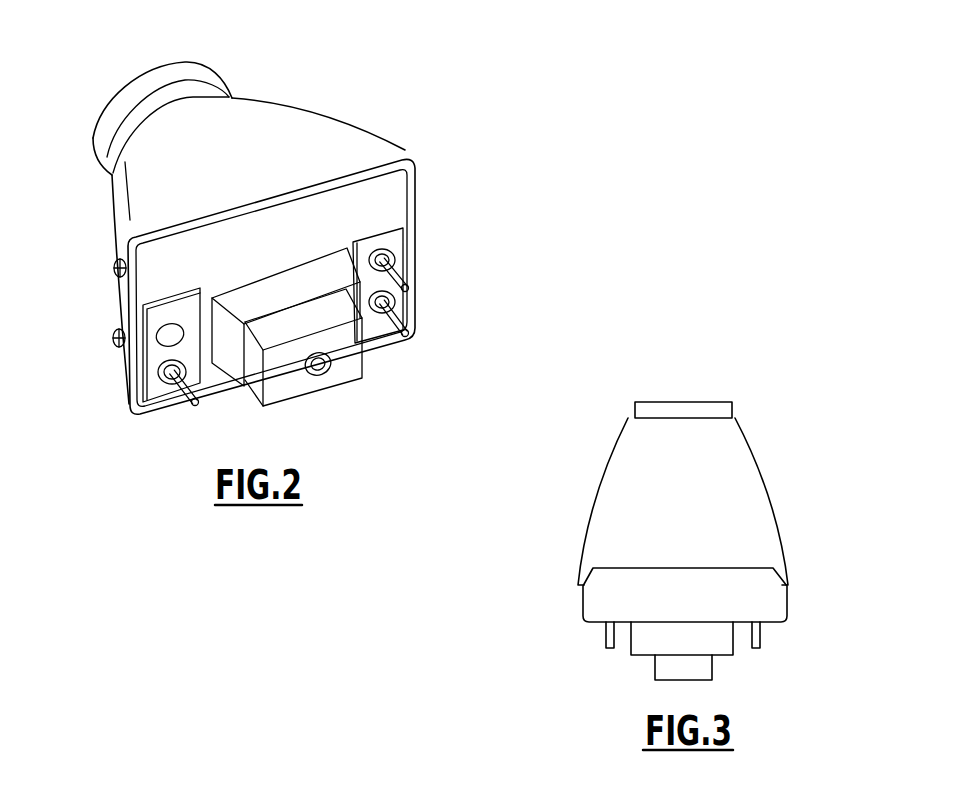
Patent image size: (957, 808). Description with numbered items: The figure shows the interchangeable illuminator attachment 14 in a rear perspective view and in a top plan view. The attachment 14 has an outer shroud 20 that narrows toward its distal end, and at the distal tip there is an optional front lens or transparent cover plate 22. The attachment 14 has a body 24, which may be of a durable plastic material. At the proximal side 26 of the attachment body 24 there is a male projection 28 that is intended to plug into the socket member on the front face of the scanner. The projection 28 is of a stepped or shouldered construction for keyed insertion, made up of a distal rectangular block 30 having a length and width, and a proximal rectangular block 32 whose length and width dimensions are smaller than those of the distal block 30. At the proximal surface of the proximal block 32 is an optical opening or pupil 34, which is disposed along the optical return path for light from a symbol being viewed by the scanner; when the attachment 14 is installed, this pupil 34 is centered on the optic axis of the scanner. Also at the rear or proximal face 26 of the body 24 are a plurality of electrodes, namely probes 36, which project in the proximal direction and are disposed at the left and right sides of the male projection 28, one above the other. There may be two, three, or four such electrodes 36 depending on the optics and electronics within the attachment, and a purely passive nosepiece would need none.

In FIG. 2, the interchangeable illuminator attachment 14 is at (62, 271).
In FIG. 3, the interchangeable illuminator attachment 14 is at (868, 562).
In FIG. 2, the outer shroud 20 is at (317, 118).
In FIG. 3, the outer shroud 20 is at (767, 477).
In FIG. 2, the transparent cover plate 22 is at (190, 63).
In FIG. 3, the transparent cover plate 22 is at (730, 403).
In FIG. 3, the body 24 is at (588, 600).
In FIG. 2, the proximal side 26 is at (478, 168).
In FIG. 3, the proximal side 26 is at (603, 665).
In FIG. 2, the male projection 28 is at (328, 246).
In FIG. 3, the male projection 28 is at (765, 698).
In FIG. 2, the distal rectangular block 30 is at (225, 358).
In FIG. 3, the distal rectangular block 30 is at (648, 640).
In FIG. 2, the proximal rectangular block 32 is at (357, 360).
In FIG. 3, the proximal rectangular block 32 is at (713, 667).
In FIG. 2, the optical opening or pupil 34 is at (332, 370).
In FIG. 2, the probes 36 is at (413, 275).
In FIG. 3, the probes 36 is at (604, 636).